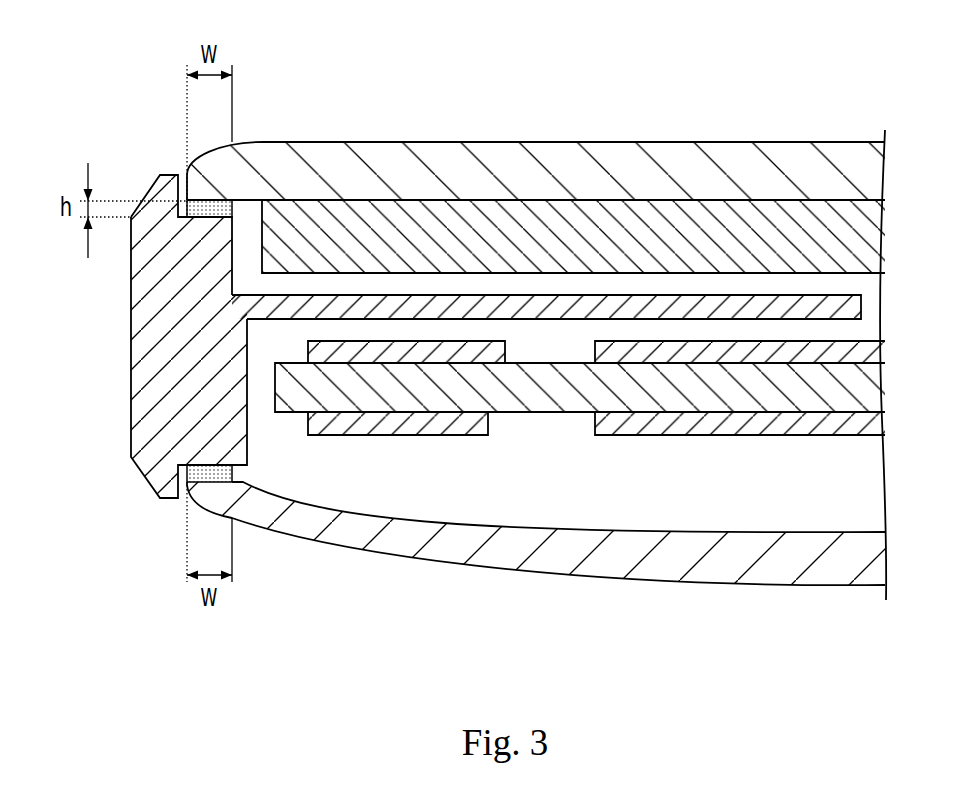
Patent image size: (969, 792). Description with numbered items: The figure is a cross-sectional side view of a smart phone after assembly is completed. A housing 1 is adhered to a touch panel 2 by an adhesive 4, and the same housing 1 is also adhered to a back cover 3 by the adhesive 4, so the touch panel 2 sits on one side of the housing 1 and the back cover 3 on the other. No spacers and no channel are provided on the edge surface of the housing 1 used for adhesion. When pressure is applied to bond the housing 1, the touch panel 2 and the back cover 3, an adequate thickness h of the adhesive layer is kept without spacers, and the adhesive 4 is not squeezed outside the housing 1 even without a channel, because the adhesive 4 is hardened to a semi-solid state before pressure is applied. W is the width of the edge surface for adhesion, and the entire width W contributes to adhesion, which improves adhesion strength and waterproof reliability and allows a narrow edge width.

The housing 1 is at (131, 315).
The touch panel 2 is at (507, 160).
The back cover 3 is at (533, 562).
The adhesive 4 is at (208, 206).